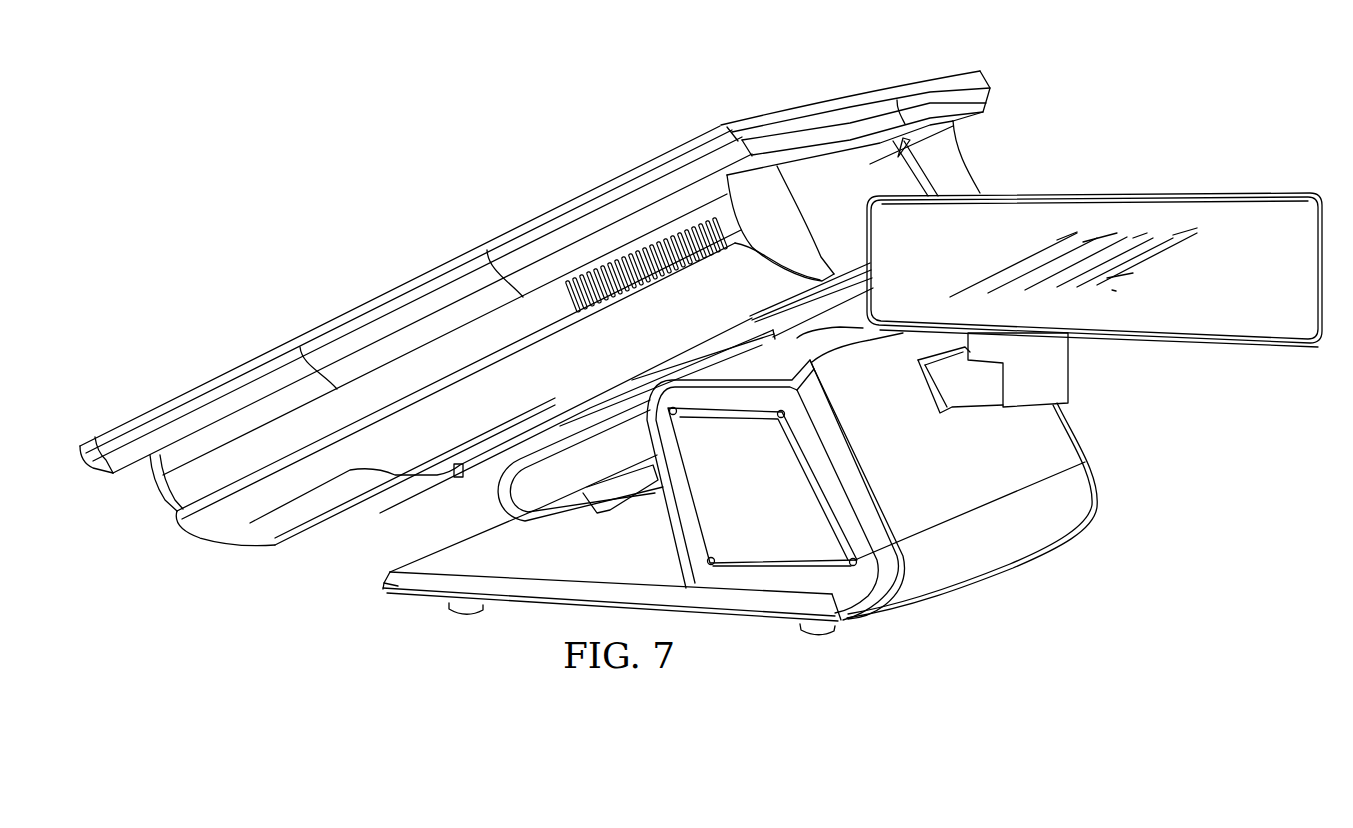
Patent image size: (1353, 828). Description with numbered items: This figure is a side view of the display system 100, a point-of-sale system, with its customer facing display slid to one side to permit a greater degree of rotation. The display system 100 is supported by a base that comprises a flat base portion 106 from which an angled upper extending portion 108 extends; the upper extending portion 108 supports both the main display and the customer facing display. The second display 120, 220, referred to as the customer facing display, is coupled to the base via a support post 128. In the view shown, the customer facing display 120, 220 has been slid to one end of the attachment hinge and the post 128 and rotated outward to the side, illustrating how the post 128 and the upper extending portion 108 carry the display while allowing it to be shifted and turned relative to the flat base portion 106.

The display system 100 is at (420, 174).
The flat base portion 106 is at (617, 568).
The upper extending portion 108 is at (1070, 447).
The second display 120 is at (1094, 234).
The customer facing display 220 is at (1132, 194).
The support post 128 is at (1063, 373).